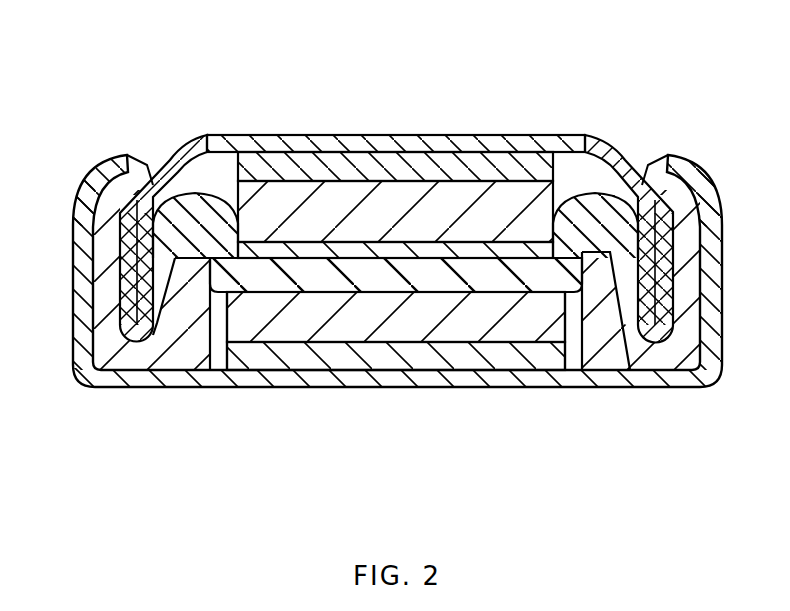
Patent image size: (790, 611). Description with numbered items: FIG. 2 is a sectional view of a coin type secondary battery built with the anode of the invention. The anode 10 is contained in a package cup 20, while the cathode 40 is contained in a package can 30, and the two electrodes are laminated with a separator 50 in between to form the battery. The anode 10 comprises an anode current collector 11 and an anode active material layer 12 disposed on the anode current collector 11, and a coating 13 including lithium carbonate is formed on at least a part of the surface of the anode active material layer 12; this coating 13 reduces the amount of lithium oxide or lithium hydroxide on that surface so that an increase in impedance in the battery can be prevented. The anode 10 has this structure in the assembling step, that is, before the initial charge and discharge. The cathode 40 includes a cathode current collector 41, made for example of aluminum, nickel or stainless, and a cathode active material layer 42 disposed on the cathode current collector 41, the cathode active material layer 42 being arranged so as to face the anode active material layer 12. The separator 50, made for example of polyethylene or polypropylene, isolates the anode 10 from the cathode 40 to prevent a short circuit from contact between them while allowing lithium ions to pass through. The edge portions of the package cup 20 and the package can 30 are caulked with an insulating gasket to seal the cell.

The anode 10 is at (413, 148).
The anode current collector 11 is at (336, 170).
The anode active material layer 12 is at (445, 200).
The coating 13 is at (298, 82).
The package cup 20 is at (236, 135).
The package can 30 is at (278, 388).
The cathode 40 is at (396, 396).
The cathode current collector 41 is at (525, 453).
The cathode active material layer 42 is at (505, 332).
The separator 50 is at (600, 205).